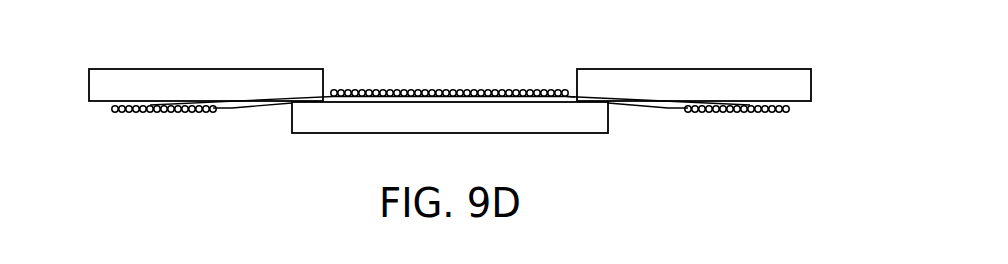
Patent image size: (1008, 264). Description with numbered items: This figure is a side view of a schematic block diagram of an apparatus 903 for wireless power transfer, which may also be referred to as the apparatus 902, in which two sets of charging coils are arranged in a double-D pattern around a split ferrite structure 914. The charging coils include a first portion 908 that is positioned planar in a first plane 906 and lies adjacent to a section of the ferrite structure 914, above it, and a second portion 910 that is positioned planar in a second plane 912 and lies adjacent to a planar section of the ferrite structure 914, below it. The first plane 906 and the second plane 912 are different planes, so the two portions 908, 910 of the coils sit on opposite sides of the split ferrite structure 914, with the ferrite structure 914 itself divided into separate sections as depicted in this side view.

The apparatus 902 is at (238, 110).
The apparatus 903 is at (137, 50).
The first plane 906 is at (580, 86).
The first portion of the charging coils 908 is at (330, 60).
The second portion of the charging coils 910 is at (225, 115).
The second plane 912 is at (86, 113).
The ferrite structure 914 is at (583, 134).